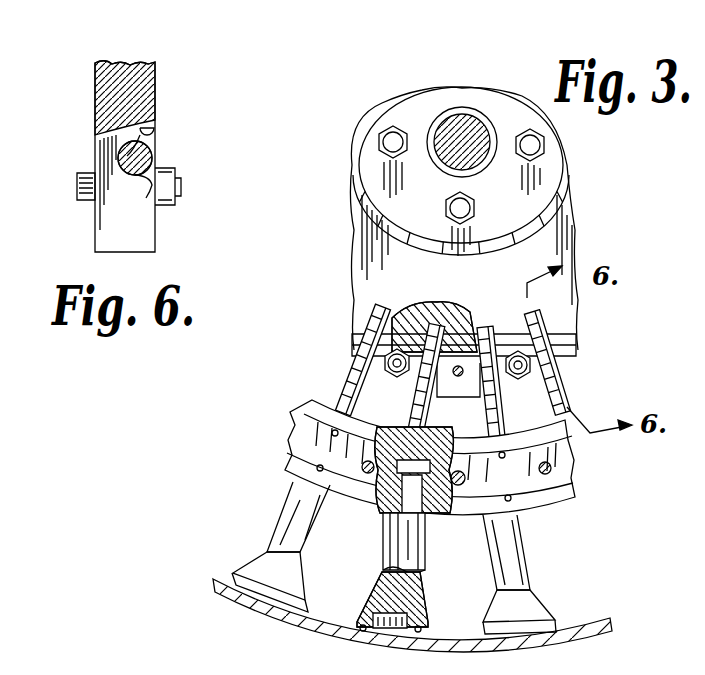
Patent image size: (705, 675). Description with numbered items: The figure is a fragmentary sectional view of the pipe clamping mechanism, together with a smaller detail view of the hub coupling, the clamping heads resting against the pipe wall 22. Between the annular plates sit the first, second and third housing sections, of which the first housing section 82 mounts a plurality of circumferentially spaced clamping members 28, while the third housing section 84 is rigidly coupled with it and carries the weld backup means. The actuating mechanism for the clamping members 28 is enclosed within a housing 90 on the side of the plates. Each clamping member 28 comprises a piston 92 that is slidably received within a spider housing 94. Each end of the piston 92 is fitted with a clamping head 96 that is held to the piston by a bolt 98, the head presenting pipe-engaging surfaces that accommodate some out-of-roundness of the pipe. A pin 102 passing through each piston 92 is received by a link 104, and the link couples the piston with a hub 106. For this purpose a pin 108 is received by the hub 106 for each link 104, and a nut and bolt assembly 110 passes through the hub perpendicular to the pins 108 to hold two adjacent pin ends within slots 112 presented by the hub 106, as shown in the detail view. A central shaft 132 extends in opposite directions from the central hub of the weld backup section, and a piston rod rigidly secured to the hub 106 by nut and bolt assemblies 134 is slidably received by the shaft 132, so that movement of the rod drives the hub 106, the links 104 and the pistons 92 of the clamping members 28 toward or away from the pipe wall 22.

In FIG. 3, the arcuate base track 22 is at (597, 638).
In FIG. 3, the clamping member 28 is at (392, 500).
In FIG. 3, the first housing section 82 is at (240, 673).
In FIG. 3, the third housing section 84 is at (306, 673).
In FIG. 3, the housing 90 is at (216, 670).
In FIG. 3, the piston 92 is at (385, 531).
In FIG. 3, the spider housing 94 is at (557, 493).
In FIG. 3, the clamping head 96 is at (421, 612).
In FIG. 3, the bolt 98 is at (394, 630).
In FIG. 3, the pin 102 is at (390, 436).
In FIG. 6, the link 104 is at (150, 185).
In FIG. 3, the link 104 is at (437, 380).
In FIG. 6, the hub 106 is at (97, 100).
In FIG. 3, the hub 106 is at (464, 218).
In FIG. 6, the pin 108 is at (142, 155).
In FIG. 3, the pin 108 is at (458, 312).
In FIG. 6, the nut and bolt assembly 110 is at (85, 190).
In FIG. 3, the nut and bolt assembly 110 is at (401, 378).
In FIG. 6, the slot 112 is at (150, 130).
In FIG. 3, the central shaft 132 is at (470, 140).
In FIG. 3, the nut and bolt assembly 134 is at (386, 134).